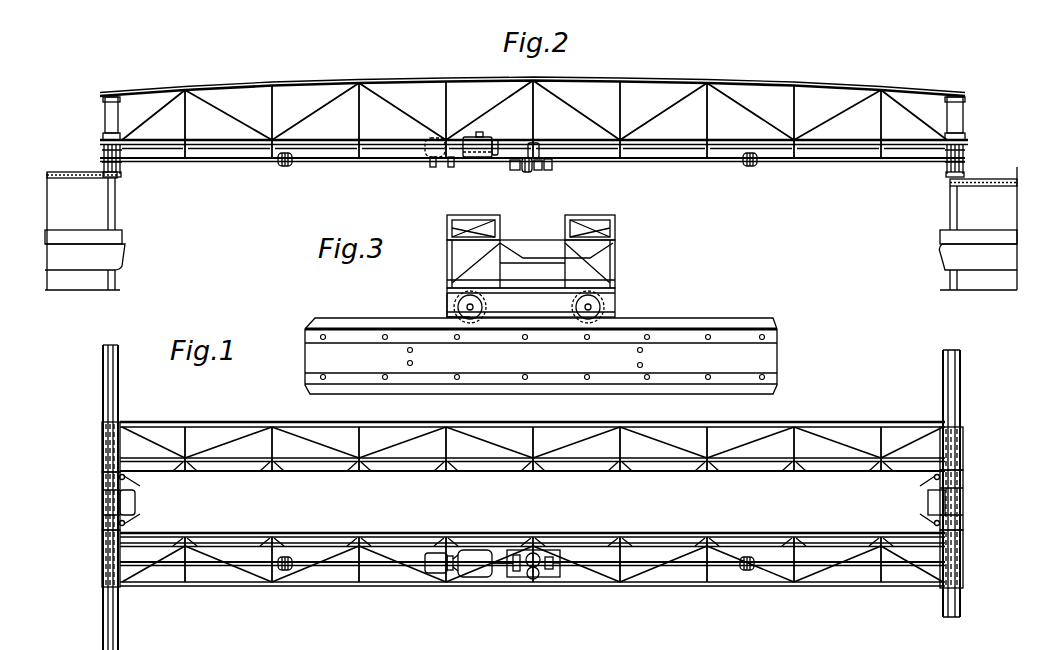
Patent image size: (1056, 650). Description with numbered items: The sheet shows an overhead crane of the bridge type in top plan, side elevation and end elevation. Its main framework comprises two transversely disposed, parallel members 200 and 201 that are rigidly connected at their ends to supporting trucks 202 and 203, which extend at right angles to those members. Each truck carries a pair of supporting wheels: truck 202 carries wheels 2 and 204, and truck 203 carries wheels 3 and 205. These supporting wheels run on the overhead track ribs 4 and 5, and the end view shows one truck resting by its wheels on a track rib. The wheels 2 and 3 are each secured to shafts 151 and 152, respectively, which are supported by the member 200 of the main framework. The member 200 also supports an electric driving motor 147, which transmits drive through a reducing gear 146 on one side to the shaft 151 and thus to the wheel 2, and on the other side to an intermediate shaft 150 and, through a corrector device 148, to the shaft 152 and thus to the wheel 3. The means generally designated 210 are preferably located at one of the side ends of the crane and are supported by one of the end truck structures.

In FIG. 2, the supporting wheel 2 is at (114, 172).
In FIG. 1, the supporting wheel 2 is at (102, 567).
In FIG. 2, the supporting wheel 3 is at (945, 178).
In FIG. 3, the supporting wheel 3 is at (446, 304).
In FIG. 1, the supporting wheel 3 is at (963, 557).
In FIG. 2, the track rib 4 is at (104, 176).
In FIG. 1, the track rib 4 is at (118, 372).
In FIG. 2, the track rib 5 is at (960, 182).
In FIG. 3, the track rib 5 is at (720, 330).
In FIG. 1, the track rib 5 is at (960, 378).
In FIG. 2, the reducing gear 146 is at (426, 147).
In FIG. 1, the reducing gear 146 is at (436, 553).
In FIG. 2, the electric driving motor 147 is at (486, 137).
In FIG. 1, the electric driving motor 147 is at (478, 551).
In FIG. 2, the corrector device 148 is at (537, 155).
In FIG. 1, the corrector device 148 is at (535, 553).
In FIG. 2, the intermediate shaft 150 is at (488, 163).
In FIG. 1, the intermediate shaft 150 is at (495, 578).
In FIG. 2, the shaft 151 is at (344, 163).
In FIG. 1, the shaft 151 is at (322, 557).
In FIG. 2, the shaft 152 is at (818, 163).
In FIG. 1, the shaft 152 is at (830, 583).
In FIG. 2, the transversely disposed parallel member 200 is at (757, 81).
In FIG. 1, the transversely disposed parallel member 200 is at (215, 590).
In FIG. 1, the transversely disposed parallel member 201 is at (220, 420).
In FIG. 2, the supporting truck 202 is at (105, 116).
In FIG. 1, the supporting truck 202 is at (102, 497).
In FIG. 2, the supporting truck 203 is at (966, 122).
In FIG. 3, the supporting truck 203 is at (618, 293).
In FIG. 1, the supporting truck 203 is at (963, 454).
In FIG. 1, the supporting wheel 204 is at (102, 447).
In FIG. 3, the supporting wheel 205 is at (618, 309).
In FIG. 1, the supporting wheel 205 is at (963, 438).
In FIG. 1, the means 210 is at (928, 500).